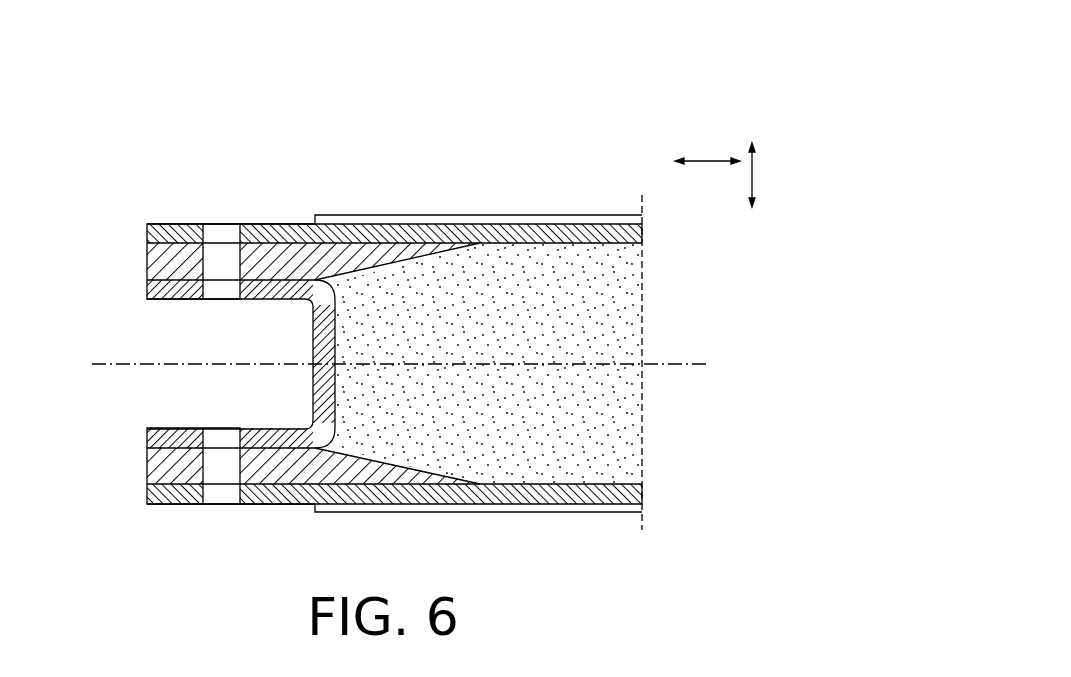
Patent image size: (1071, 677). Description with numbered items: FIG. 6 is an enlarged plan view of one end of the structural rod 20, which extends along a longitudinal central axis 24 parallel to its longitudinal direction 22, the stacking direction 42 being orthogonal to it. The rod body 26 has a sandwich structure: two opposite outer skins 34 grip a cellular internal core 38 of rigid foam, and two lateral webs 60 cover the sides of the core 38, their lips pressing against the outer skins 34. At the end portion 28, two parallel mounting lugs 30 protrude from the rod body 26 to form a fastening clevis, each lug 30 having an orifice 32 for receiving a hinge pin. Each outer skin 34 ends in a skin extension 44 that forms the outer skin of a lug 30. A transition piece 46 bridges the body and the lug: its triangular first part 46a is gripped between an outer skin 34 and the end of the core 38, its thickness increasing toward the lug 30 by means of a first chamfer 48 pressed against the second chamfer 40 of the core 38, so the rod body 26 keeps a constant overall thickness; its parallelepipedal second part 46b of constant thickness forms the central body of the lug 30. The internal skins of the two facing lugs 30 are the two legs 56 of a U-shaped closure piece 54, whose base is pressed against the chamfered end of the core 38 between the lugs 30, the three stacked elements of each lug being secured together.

The structural rod 20 is at (627, 108).
The longitudinal direction 22 is at (705, 158).
The longitudinal central axis 24 is at (703, 363).
The rod body 26 is at (503, 158).
The end portion 28 is at (229, 221).
The mounting lug 30 is at (122, 263).
The orifice 32 is at (218, 255).
The outer skin 34 is at (540, 215).
The cellular internal core 38 is at (568, 308).
The chamfer 40 is at (398, 465).
The stacking direction 42 is at (758, 175).
The skin extension 44 is at (150, 225).
The transition piece 46 is at (283, 241).
The first part 46a is at (417, 474).
The second part 46b is at (176, 256).
The first chamfer 48 is at (452, 265).
The closure piece 54 is at (165, 302).
The leg of the U 56 is at (285, 301).
The lateral web 60 is at (596, 215).